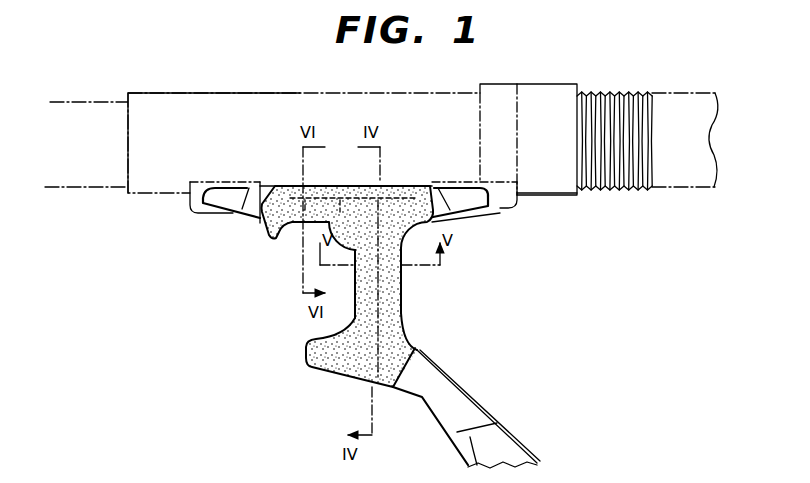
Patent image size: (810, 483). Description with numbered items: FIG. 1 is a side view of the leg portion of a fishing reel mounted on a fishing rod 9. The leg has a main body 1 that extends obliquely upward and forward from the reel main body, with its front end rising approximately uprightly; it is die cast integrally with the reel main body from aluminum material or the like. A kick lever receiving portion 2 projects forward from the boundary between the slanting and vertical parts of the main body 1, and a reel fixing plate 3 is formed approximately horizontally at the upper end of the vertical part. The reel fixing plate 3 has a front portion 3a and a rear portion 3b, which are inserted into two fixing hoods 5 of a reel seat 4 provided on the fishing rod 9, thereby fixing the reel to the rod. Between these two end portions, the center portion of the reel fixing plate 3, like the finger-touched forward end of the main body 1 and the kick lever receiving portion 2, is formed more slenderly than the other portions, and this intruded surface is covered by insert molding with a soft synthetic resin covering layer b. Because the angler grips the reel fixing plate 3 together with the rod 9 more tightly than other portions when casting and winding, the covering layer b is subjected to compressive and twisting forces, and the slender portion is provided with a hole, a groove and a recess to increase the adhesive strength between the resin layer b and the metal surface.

The main body of the leg portion 1 is at (482, 395).
The kick lever receiving portion 2 is at (308, 366).
The reel fixing plate 3 is at (404, 185).
The front portion of the reel fixing plate 3a is at (236, 206).
The rear portion of the reel fixing plate 3b is at (474, 203).
The reel seat 4 is at (135, 195).
The fixing hood 5 is at (207, 216).
The fishing rod 9 is at (693, 188).
The soft synthetic resin covering layer b is at (376, 326).